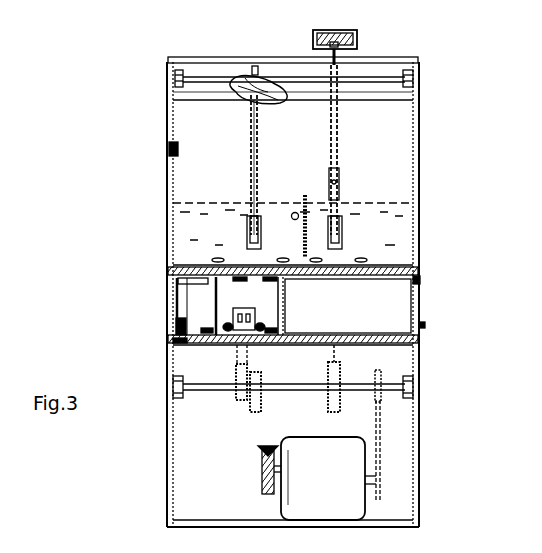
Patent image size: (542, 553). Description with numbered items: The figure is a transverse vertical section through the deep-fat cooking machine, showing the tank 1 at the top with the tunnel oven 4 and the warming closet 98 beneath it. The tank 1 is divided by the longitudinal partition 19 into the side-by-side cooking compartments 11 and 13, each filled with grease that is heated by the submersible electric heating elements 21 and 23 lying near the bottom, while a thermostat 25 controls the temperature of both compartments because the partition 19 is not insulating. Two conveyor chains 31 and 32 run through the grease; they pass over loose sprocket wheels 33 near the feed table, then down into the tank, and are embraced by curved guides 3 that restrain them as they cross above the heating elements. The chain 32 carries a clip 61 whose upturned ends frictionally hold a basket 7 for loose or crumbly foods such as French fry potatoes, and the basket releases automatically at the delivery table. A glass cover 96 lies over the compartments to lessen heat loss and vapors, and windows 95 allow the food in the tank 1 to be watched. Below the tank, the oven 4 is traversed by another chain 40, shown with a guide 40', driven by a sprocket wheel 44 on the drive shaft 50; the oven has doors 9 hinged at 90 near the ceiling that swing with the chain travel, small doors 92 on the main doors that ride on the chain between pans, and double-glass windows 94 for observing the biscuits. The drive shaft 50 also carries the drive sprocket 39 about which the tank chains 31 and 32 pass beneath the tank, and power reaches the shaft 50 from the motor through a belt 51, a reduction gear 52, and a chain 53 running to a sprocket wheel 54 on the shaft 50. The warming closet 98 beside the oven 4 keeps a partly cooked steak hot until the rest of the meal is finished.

The tank 1 is at (420, 111).
The curved guides 3 is at (327, 237).
The tunnel oven 4 is at (203, 306).
The basket 7 is at (358, 37).
The doors 9 is at (254, 306).
The cooking compartment 11 is at (293, 185).
The cooking compartment 13 is at (291, 206).
The longitudinal partition 19 is at (305, 195).
The electric heating element 21 is at (232, 262).
The electric heating element 23 is at (415, 258).
The thermostat 25 is at (294, 212).
The conveyor chain 31 is at (249, 129).
The conveyor chain 32 is at (341, 146).
The loose sprocket wheels 33 is at (328, 76).
The drive sprocket 39 is at (328, 406).
The chain 40 is at (213, 358).
The chain guide 40' is at (154, 350).
The sprocket wheel 44 is at (238, 398).
The drive shaft 50 is at (201, 392).
The belt 51 is at (262, 491).
The reduction gear 52 is at (328, 478).
The chain 53 is at (383, 466).
The sprocket wheel 54 is at (383, 398).
The clip 61 is at (334, 30).
The hinge 90 is at (205, 283).
The small doors 92 is at (264, 314).
The windows 94 is at (176, 313).
The windows 95 is at (168, 123).
The glass cover 96 is at (220, 60).
The warming closet 98 is at (348, 306).